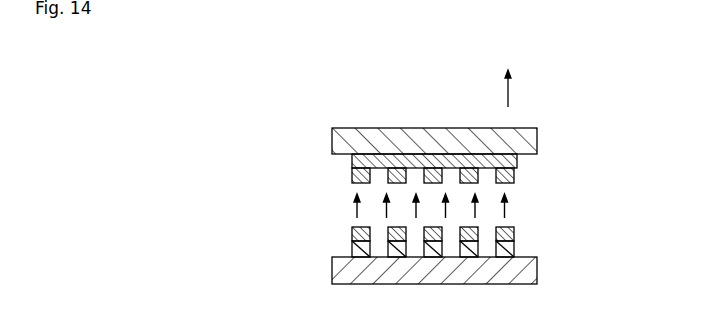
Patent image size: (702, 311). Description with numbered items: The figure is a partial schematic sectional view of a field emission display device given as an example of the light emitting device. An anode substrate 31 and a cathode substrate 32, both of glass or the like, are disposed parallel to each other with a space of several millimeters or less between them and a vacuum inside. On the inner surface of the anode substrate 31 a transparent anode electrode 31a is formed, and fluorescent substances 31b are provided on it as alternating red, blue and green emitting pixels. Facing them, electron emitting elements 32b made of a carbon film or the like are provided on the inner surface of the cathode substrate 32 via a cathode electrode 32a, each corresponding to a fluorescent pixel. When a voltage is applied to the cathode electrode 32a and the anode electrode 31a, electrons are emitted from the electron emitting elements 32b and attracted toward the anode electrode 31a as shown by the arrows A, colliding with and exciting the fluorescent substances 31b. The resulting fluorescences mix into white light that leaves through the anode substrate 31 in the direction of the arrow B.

The anode substrate 31 is at (545, 138).
The transparent anode electrode 31a is at (518, 161).
The fluorescent substances 31b is at (516, 182).
The cathode substrate 32 is at (538, 276).
The cathode electrode 32a is at (516, 247).
The electron emitting elements 32b is at (516, 233).
The arrows A is at (475, 213).
The arrow B is at (506, 88).